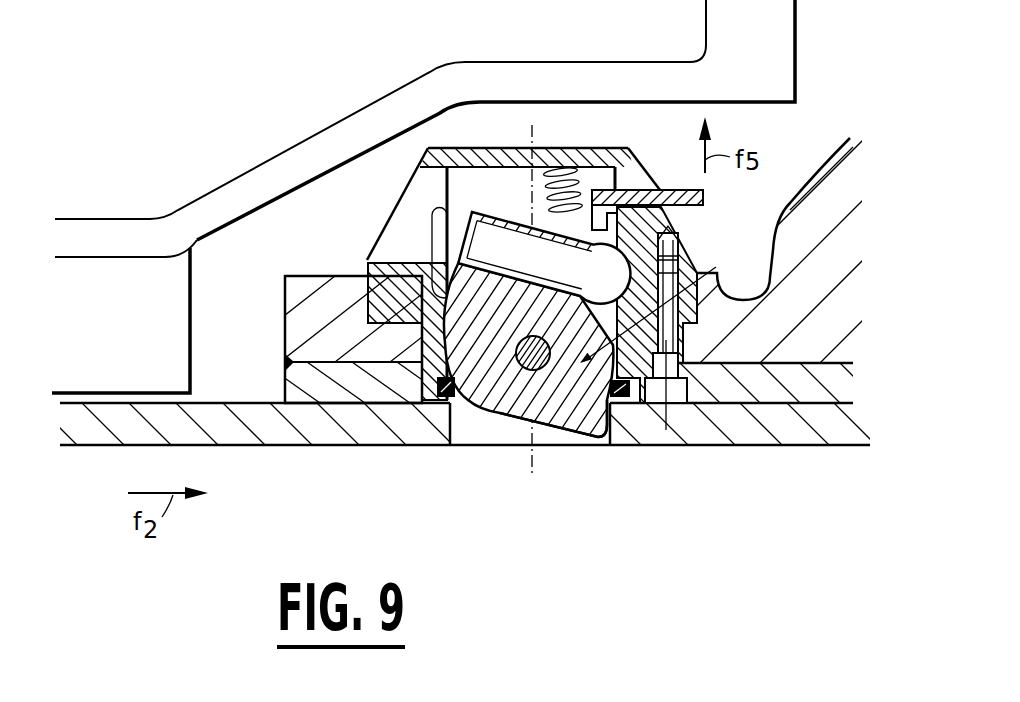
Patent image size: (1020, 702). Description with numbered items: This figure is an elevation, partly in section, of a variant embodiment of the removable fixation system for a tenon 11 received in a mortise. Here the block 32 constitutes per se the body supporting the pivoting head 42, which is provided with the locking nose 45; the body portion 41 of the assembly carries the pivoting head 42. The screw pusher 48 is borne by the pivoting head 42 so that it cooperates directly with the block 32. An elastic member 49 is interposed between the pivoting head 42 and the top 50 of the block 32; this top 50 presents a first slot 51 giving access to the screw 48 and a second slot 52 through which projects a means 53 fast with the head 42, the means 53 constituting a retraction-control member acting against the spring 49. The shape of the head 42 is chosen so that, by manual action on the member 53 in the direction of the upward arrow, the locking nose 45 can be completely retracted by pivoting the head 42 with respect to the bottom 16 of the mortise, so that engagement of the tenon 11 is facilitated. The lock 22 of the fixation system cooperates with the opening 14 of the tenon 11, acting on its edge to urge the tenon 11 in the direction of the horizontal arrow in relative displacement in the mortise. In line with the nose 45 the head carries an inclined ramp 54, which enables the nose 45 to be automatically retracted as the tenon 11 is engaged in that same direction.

The tenon 11 is at (770, 445).
The opening 14 is at (433, 442).
The bottom of the mortise 16 is at (829, 398).
The lock 22 is at (716, 267).
The block 32 is at (367, 263).
The clamping body 41 is at (518, 385).
The pivoting head 42 is at (565, 418).
The locking nose 45 is at (597, 427).
The screw pusher 48 is at (482, 226).
The elastic member 49 is at (563, 165).
The top of the block 50 is at (485, 150).
The first slot 51 is at (427, 183).
The second slot 52 is at (633, 172).
The retraction-control member 53 is at (703, 198).
The inclined ramp 54 is at (528, 372).